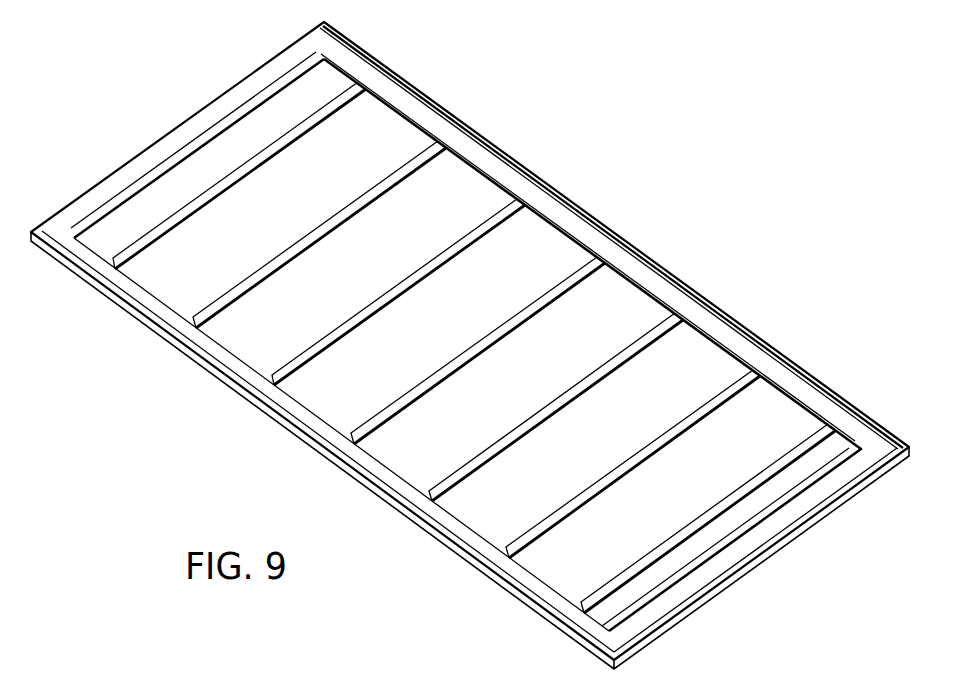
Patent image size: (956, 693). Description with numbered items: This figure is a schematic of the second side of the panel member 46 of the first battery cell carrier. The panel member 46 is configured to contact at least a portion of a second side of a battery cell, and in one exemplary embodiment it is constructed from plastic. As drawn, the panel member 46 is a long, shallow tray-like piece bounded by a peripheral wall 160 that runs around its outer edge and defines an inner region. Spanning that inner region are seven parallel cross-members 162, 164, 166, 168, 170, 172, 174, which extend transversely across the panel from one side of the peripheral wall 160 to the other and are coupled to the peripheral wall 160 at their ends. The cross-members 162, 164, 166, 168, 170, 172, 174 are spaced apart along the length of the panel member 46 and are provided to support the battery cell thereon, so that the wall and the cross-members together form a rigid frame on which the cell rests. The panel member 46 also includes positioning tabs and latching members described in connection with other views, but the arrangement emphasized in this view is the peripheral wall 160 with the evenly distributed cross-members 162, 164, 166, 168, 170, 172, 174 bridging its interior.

The panel member 46 is at (470, 345).
The peripheral wall 160 is at (801, 368).
The cross-member 162 is at (683, 528).
The cross-member 164 is at (628, 462).
The cross-member 166 is at (548, 406).
The cross-member 168 is at (470, 349).
The cross-member 170 is at (387, 288).
The cross-member 172 is at (312, 229).
The cross-member 174 is at (229, 171).